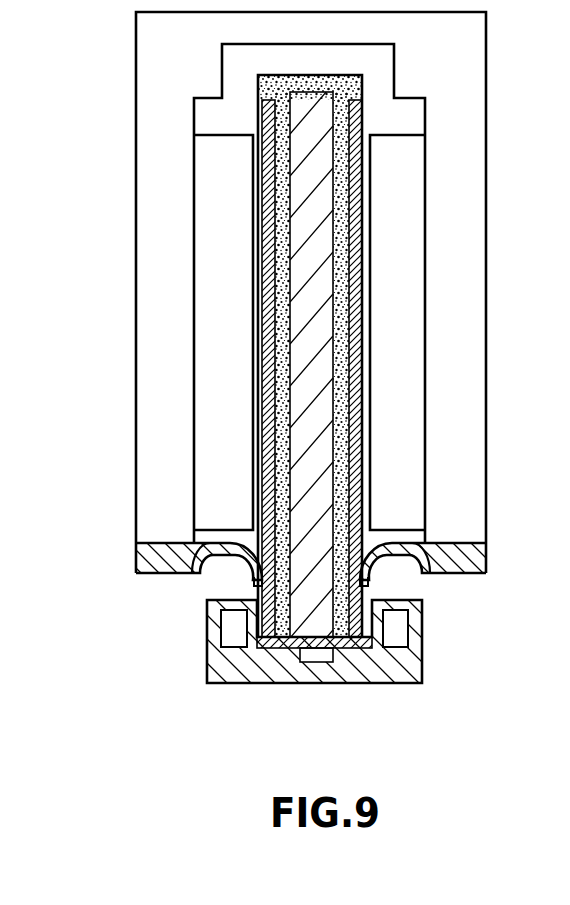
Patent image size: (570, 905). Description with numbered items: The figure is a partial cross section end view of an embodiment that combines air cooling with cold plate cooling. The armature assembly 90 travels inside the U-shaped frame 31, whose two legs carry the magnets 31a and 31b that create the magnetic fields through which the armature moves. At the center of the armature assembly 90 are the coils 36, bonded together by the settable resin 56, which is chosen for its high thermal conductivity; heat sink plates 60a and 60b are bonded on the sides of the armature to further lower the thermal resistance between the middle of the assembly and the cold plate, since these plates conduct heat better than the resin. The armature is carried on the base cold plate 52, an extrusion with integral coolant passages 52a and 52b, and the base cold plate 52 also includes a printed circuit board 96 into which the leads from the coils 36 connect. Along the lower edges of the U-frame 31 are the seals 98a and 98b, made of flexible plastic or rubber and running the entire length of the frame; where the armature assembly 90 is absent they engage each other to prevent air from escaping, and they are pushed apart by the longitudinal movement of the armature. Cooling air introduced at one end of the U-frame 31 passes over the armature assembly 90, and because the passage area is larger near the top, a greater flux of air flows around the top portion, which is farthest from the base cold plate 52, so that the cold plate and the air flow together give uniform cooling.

The U-shaped frame 31 is at (136, 156).
The magnet 31a is at (208, 370).
The magnet 31b is at (407, 346).
The coils 36 is at (313, 232).
The settable resin 56 is at (290, 525).
The heat sink plate 60a is at (261, 484).
The heat sink plate 60b is at (365, 393).
The seal 98a is at (137, 552).
The seal 98b is at (486, 563).
The base cold plate 52 is at (395, 684).
The coolant passage 52a is at (230, 628).
The coolant passage 52b is at (400, 628).
The printed circuit board 96 is at (262, 646).
The armature assembly 90 is at (325, 709).